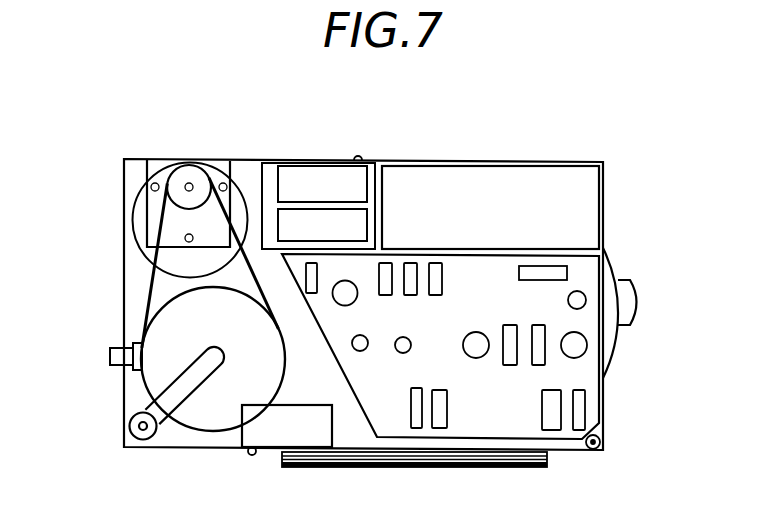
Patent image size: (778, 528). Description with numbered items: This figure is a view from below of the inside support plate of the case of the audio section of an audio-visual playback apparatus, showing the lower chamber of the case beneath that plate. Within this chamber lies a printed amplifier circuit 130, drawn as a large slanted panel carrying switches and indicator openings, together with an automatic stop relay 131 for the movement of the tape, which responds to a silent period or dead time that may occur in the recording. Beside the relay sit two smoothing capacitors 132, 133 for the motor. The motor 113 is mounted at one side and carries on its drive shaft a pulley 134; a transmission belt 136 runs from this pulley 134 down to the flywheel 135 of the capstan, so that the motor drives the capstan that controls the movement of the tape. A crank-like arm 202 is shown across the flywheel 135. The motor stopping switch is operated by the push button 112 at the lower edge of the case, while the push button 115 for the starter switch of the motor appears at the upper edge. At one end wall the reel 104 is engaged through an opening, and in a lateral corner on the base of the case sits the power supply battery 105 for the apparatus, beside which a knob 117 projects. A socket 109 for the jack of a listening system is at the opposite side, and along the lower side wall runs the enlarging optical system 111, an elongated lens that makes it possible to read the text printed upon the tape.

The reel 104 is at (610, 268).
The battery 105 is at (577, 206).
The socket 109 is at (112, 353).
The enlarging optical system 111 is at (385, 456).
The push button 112 is at (251, 454).
The motor 113 is at (142, 218).
The push button 115 is at (360, 157).
The knob 117 is at (630, 302).
The printed amplifier circuit 130 is at (472, 393).
The automatic stop relay 131 is at (272, 173).
The smoothing capacitor 132 is at (322, 184).
The smoothing capacitor 133 is at (322, 225).
The pulley 134 is at (184, 180).
The flywheel 135 is at (160, 373).
The transmission belt 136 is at (148, 281).
The crank handle 202 is at (185, 438).